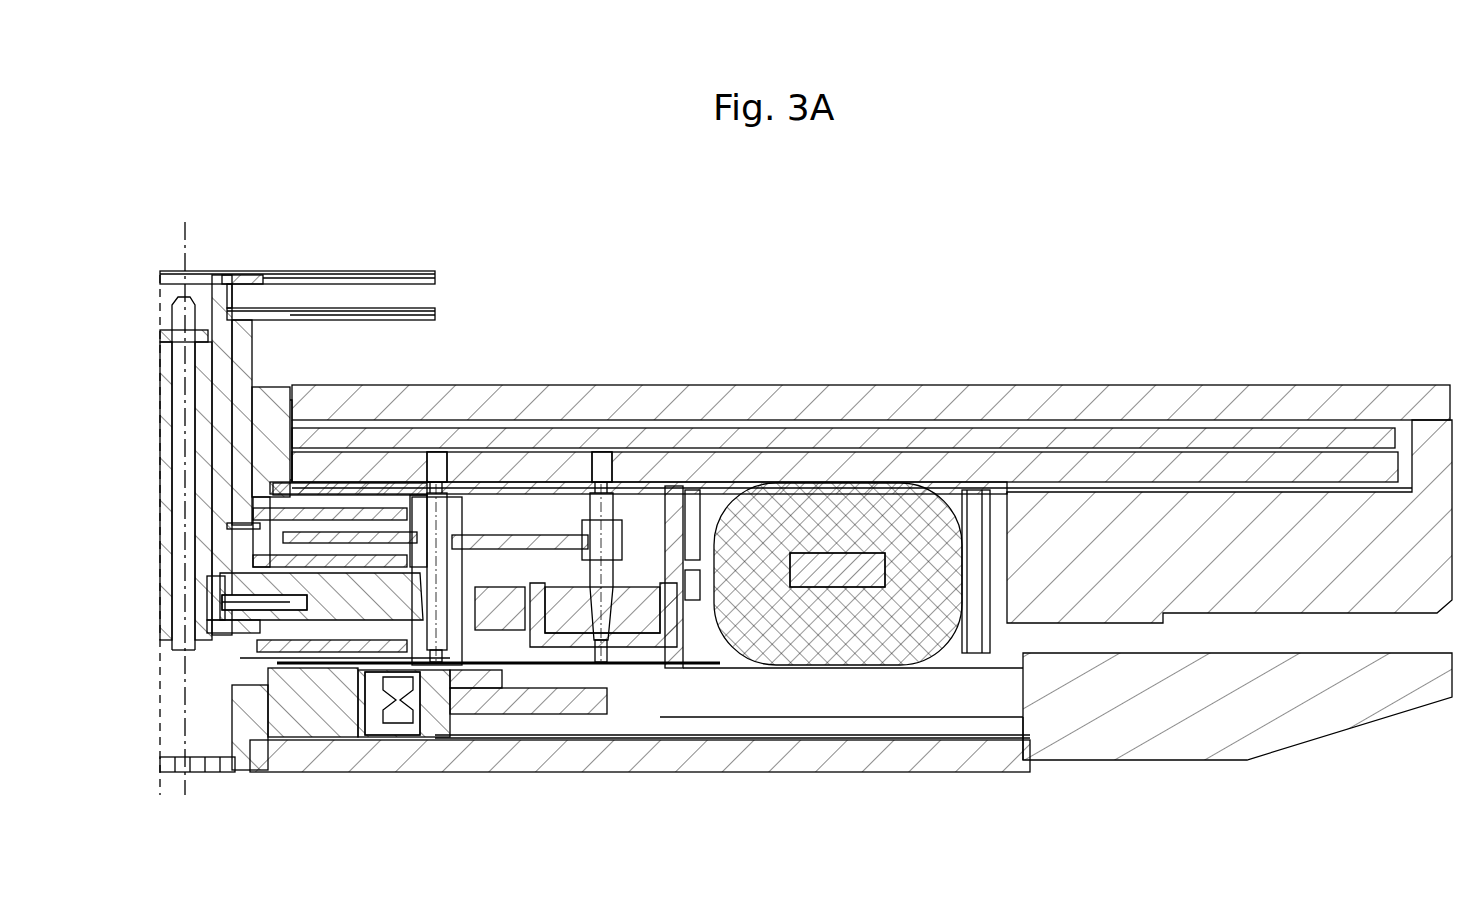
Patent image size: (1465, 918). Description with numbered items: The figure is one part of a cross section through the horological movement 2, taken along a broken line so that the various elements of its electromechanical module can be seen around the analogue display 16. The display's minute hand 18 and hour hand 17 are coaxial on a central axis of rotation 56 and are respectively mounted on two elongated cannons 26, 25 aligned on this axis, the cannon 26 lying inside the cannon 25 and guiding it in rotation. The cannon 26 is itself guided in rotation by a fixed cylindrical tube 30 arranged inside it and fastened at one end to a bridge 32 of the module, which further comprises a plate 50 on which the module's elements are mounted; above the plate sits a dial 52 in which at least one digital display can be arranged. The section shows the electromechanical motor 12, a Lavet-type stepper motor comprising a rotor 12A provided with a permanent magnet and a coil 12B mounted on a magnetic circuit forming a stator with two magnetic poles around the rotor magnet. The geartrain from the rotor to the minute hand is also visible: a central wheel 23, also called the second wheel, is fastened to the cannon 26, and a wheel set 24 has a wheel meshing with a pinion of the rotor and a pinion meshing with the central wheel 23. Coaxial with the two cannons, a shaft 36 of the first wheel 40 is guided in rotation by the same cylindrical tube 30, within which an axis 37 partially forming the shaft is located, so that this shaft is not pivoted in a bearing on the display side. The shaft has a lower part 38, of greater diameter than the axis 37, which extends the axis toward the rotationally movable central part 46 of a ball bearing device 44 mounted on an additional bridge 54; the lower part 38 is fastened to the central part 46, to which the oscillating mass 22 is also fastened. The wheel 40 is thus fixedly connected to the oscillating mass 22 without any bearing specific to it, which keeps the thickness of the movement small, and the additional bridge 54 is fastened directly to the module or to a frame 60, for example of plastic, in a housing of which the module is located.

The horological movement 2 is at (1320, 285).
The electromechanical motor 12 is at (717, 684).
The rotor 12A is at (640, 620).
The coil 12B is at (838, 635).
The analogue display 16 is at (378, 245).
The hour hand 17 is at (390, 318).
The minute hand 18 is at (316, 275).
The oscillating mass 22 is at (1166, 720).
The central wheel 23 is at (295, 553).
The wheel set 24 is at (516, 545).
The elongated cannon 25 is at (240, 382).
The elongated cannon 26 is at (222, 313).
The cylindrical tube 30 is at (212, 588).
The bridge 32 is at (360, 597).
The shaft 36 is at (180, 465).
The axis 37 is at (168, 418).
The lower part 38 is at (215, 745).
The wheel 40 is at (300, 712).
The ball bearing device 44 is at (413, 750).
The central part 46 is at (300, 652).
The plate 50 is at (1228, 472).
The dial 52 is at (1088, 402).
The additional bridge 54 is at (500, 705).
The central axis of rotation 56 is at (182, 768).
The frame 60 is at (1322, 590).